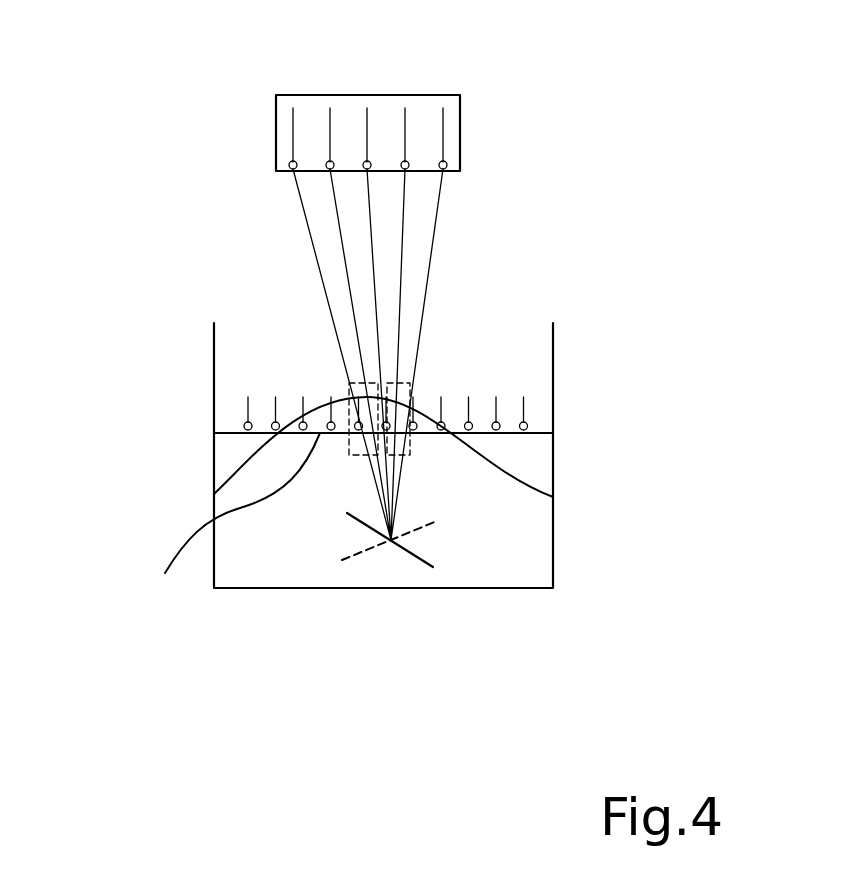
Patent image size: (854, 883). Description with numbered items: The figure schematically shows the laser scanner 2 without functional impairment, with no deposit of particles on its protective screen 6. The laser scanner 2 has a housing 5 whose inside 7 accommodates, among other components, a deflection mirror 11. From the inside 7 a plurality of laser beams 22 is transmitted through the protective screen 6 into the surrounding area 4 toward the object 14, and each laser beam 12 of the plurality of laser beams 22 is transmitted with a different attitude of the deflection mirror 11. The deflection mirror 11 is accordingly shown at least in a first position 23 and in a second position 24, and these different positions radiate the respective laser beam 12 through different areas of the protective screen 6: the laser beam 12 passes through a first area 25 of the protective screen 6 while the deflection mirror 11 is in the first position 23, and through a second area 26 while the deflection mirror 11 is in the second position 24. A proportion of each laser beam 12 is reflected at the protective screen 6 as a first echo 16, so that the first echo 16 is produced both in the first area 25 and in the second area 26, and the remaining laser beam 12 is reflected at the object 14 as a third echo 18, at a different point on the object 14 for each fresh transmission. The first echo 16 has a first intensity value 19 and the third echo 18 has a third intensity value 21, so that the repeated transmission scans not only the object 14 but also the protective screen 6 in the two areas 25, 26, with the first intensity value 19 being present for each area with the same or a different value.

The laser scanner 2 is at (597, 332).
The surrounding area 4 is at (346, 234).
The housing 5 is at (329, 590).
The protective screen 6 is at (234, 520).
The inside 7 is at (479, 564).
The deflection mirror 11 is at (424, 563).
The laser beam 12 is at (342, 242).
The object 14 is at (313, 95).
The first echo 16 is at (352, 443).
The third echo 18 is at (290, 170).
The first intensity value 19 is at (214, 494).
The third intensity value 21 is at (293, 133).
The plurality of laser beams 22 is at (316, 328).
The first position 23 is at (398, 548).
The second position 24 is at (434, 528).
The first area 25 is at (395, 387).
The second area 26 is at (357, 383).